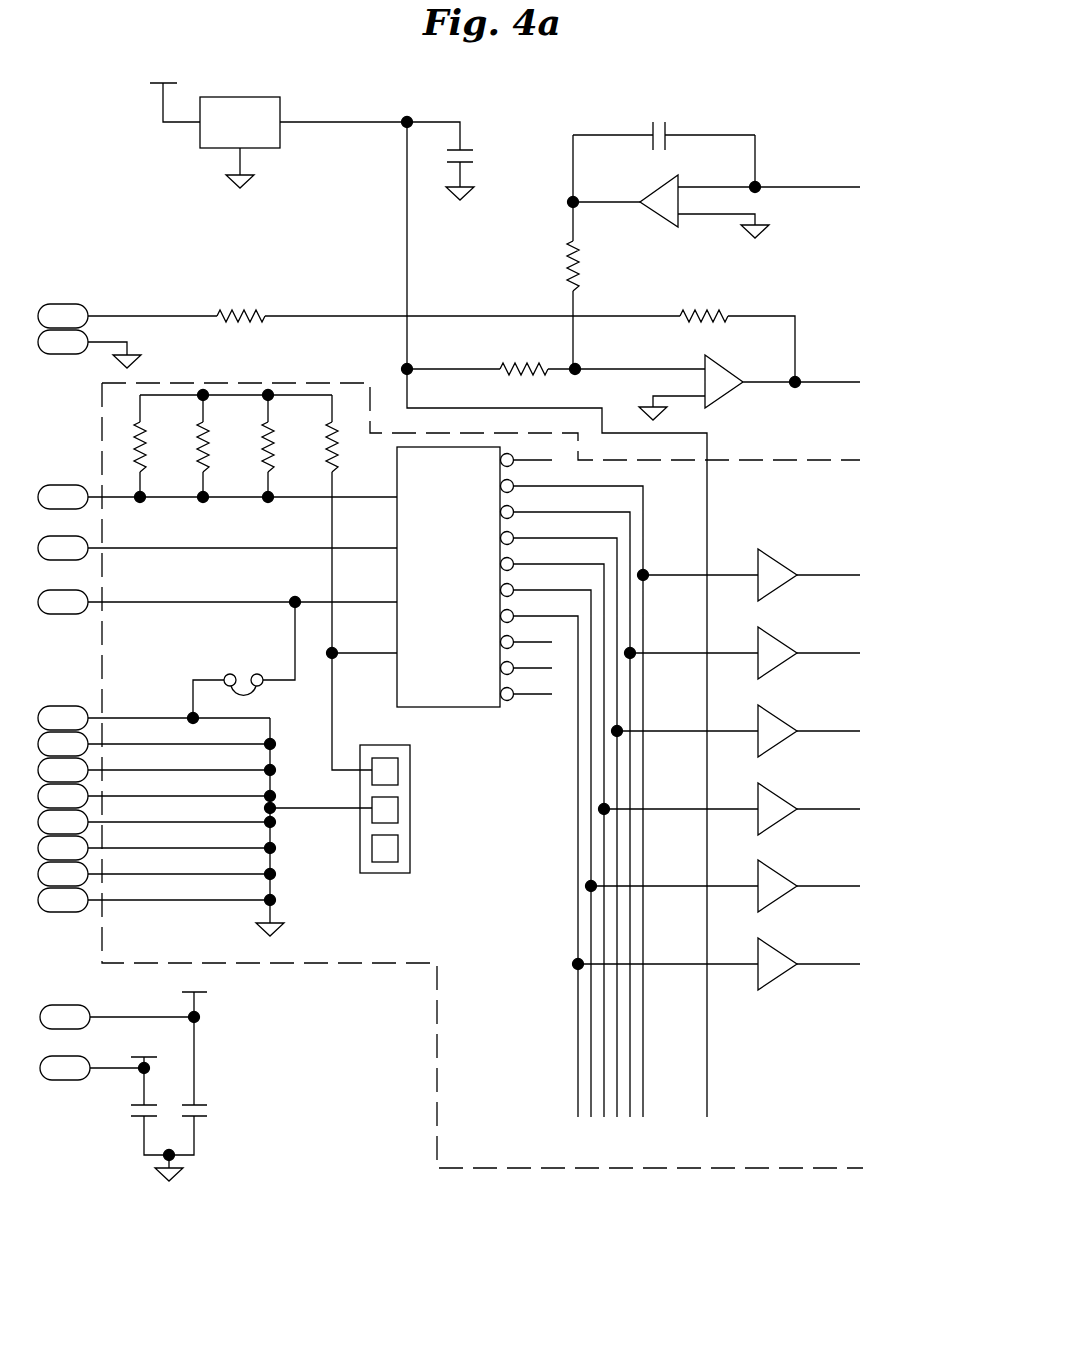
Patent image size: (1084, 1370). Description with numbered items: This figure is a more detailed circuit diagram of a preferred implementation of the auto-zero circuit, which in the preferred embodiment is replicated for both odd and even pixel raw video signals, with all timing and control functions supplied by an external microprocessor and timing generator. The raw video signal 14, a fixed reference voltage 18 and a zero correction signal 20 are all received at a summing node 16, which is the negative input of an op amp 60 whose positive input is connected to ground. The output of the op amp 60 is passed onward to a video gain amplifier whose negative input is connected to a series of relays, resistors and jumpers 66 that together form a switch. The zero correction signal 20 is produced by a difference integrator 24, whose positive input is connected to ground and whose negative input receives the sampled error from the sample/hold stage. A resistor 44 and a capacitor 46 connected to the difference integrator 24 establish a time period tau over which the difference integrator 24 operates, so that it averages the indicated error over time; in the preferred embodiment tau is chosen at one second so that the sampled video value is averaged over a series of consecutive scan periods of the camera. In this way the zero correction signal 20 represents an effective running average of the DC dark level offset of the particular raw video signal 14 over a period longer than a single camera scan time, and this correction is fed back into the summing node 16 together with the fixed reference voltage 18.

The fixed reference voltage 18 is at (389, 122).
The capacitor 46 is at (668, 129).
The zero correction signal 20 is at (600, 200).
The difference integrator 24 is at (661, 185).
The resistor 44 is at (580, 283).
The raw video signal 14 is at (197, 316).
The summing node 16 is at (518, 316).
The op amp 60 is at (744, 385).
The jumpers 66 is at (317, 855).